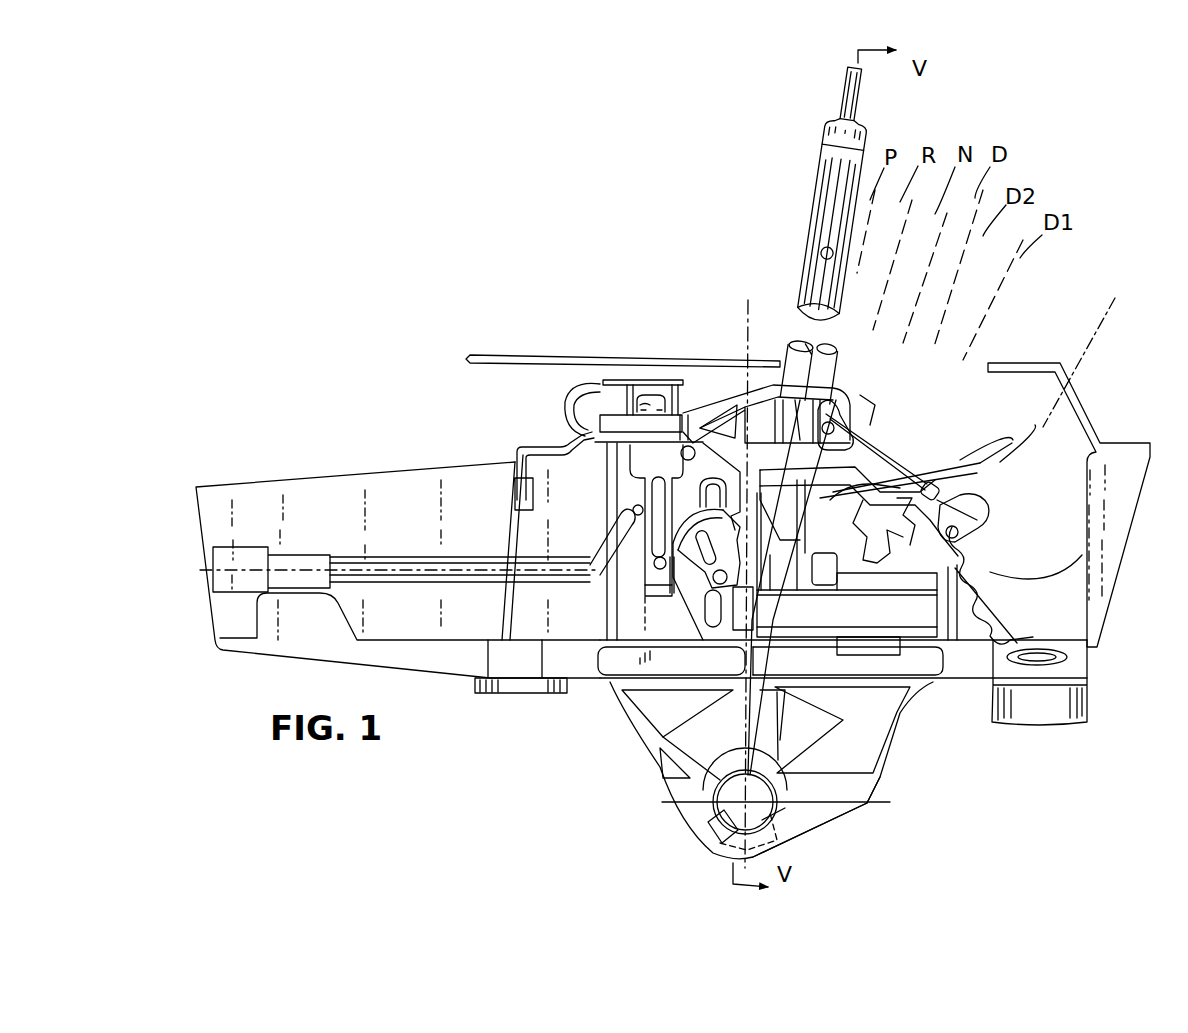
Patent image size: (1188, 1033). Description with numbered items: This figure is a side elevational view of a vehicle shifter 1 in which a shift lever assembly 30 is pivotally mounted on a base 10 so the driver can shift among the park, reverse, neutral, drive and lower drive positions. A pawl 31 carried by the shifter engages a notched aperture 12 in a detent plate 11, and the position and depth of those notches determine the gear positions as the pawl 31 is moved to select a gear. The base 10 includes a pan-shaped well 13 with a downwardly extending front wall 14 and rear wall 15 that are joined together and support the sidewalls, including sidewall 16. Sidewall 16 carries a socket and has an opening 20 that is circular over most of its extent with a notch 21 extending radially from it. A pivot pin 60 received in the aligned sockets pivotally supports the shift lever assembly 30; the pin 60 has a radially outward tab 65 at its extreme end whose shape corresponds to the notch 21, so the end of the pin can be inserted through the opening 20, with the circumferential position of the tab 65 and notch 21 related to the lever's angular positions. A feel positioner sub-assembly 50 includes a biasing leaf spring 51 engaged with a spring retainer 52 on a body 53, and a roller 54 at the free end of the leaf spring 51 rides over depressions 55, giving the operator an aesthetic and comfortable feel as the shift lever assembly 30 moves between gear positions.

The shifter 1 is at (1008, 112).
The base 10 is at (275, 479).
The detent plate 11 is at (870, 518).
The notched aperture 12 is at (893, 534).
The well 13 is at (648, 767).
The front wall 14 is at (667, 780).
The rear wall 15 is at (880, 792).
The sidewall 16 is at (820, 820).
The opening 20 is at (712, 808).
The notch 21 is at (713, 838).
The shift lever assembly 30 is at (866, 166).
The pawl 31 is at (1000, 462).
The feel positioner sub-assembly 50 is at (893, 455).
The leaf spring 51 is at (860, 448).
The spring retainer 52 is at (853, 413).
The body 53 is at (724, 395).
The roller 54 is at (968, 520).
The depressions 55 is at (1018, 630).
The pivot pin 60 is at (777, 820).
The tab 65 is at (716, 862).